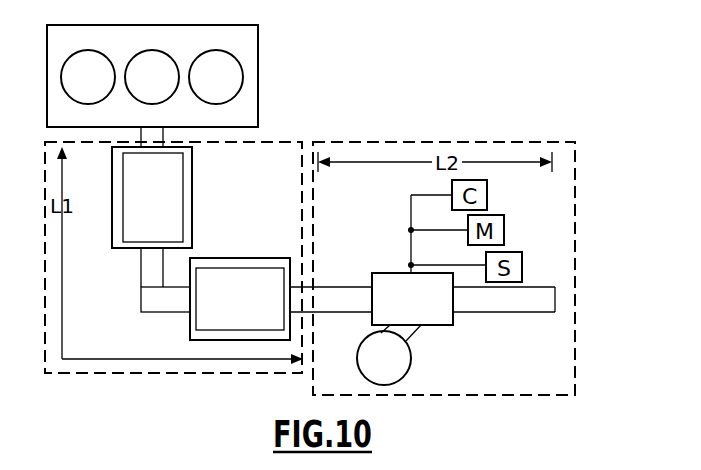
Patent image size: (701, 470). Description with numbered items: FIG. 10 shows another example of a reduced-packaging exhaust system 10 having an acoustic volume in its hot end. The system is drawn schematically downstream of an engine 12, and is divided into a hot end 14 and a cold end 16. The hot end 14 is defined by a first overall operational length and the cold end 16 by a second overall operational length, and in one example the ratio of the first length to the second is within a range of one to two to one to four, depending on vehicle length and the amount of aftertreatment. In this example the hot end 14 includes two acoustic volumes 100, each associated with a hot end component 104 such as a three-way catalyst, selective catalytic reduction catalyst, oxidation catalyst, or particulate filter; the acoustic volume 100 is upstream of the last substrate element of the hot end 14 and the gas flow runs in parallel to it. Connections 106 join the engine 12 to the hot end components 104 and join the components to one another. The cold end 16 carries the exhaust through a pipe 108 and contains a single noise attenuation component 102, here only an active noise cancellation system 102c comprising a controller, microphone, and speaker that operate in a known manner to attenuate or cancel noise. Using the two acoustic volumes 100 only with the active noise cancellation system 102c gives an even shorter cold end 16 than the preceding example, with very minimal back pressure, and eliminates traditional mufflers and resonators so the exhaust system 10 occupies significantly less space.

The exhaust system 10 is at (552, 54).
The engine 12 is at (248, 40).
The hot end 14 is at (297, 142).
The cold end 16 is at (433, 142).
The acoustic volume 100 is at (117, 250).
The noise attenuation component 102 is at (384, 252).
The active noise cancellation system 102c is at (413, 365).
The hot end component 104 is at (167, 210).
The coupling 106 is at (158, 134).
The shaft 108 is at (481, 303).